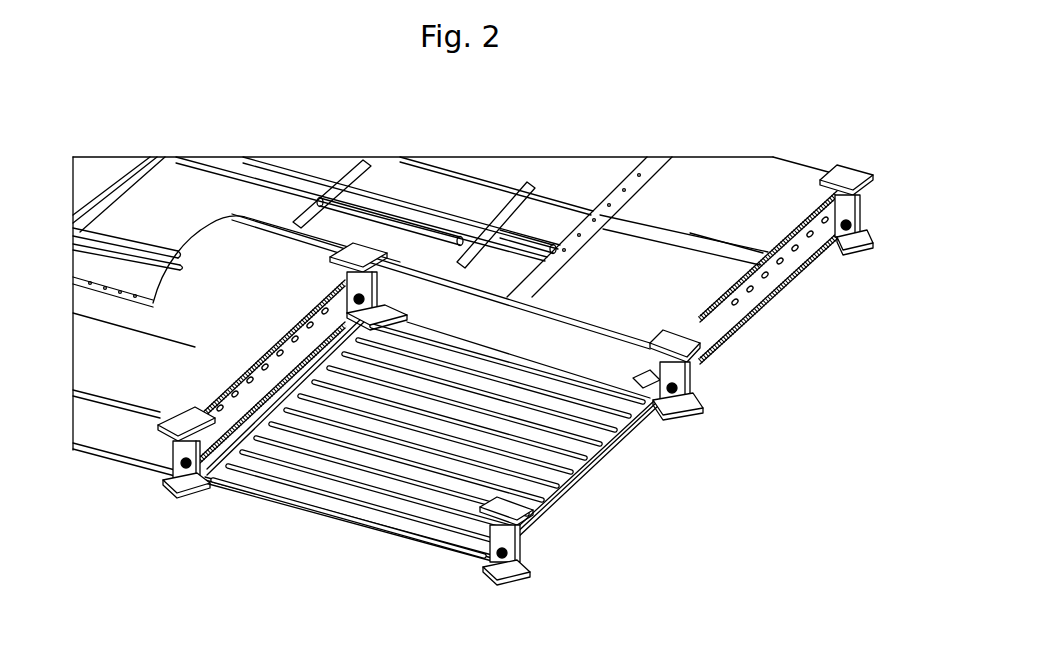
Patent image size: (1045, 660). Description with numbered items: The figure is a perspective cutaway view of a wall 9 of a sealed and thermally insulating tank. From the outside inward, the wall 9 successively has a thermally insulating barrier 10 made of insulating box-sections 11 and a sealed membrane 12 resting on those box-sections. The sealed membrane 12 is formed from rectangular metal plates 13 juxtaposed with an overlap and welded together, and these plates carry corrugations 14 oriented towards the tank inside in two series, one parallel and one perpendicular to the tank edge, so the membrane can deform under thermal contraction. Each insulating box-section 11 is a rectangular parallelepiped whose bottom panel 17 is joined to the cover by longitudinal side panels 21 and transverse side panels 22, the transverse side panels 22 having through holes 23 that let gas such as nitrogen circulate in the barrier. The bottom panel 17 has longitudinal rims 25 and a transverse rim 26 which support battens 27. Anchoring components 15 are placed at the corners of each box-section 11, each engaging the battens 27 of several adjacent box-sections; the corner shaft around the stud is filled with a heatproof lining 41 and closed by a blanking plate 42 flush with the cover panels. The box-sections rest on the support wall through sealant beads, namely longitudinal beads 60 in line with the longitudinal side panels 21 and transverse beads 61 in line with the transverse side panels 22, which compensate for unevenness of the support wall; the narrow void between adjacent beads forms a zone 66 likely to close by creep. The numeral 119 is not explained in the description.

The wall 9 is at (798, 438).
The thermally insulating barrier 10 is at (530, 327).
The insulating box-section 11 is at (122, 368).
The sealed membrane 12 is at (749, 215).
The metal plate 13 is at (189, 194).
The corrugation 14 is at (294, 188).
The anchoring component 15 is at (183, 487).
The bottom panel 17 is at (752, 329).
The longitudinal side panel 21 is at (603, 352).
The transverse side panel 22 is at (757, 300).
The through hole 23 is at (787, 258).
The longitudinal rim 25 is at (627, 372).
The transverse rim 26 is at (717, 360).
The batten 27 is at (390, 300).
The heatproof lining 41 is at (863, 207).
The blanking plate 42 is at (851, 178).
The longitudinal bead 60 is at (277, 500).
The transverse bead 61 is at (222, 474).
The zone 66 is at (580, 235).
The panel surface 119 is at (796, 195).